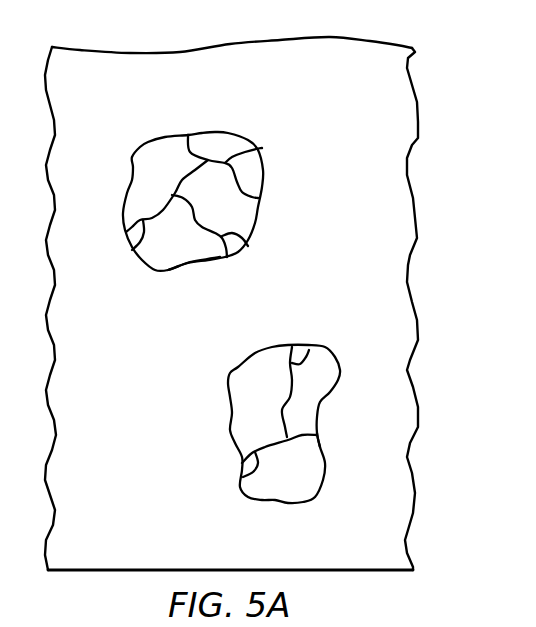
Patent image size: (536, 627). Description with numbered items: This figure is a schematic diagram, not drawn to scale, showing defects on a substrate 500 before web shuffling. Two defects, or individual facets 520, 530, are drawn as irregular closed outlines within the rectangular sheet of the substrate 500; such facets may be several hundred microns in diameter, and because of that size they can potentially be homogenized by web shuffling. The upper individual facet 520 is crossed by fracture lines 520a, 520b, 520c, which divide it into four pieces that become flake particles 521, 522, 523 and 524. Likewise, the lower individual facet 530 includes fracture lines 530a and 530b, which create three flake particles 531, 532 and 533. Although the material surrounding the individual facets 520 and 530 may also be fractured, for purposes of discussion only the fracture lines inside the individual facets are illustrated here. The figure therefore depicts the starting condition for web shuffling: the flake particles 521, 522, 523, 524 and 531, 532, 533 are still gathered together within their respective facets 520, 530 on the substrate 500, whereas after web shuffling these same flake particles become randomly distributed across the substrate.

The substrate 500 is at (130, 52).
The individual facet 520 is at (128, 192).
The fracture line 520a is at (257, 152).
The fracture line 520b is at (136, 250).
The fracture line 520c is at (250, 243).
The flake particle 521 is at (227, 140).
The flake particle 522 is at (244, 213).
The flake particle 523 is at (188, 250).
The flake particle 524 is at (152, 152).
The individual facet 530 is at (283, 500).
The fracture line 530a is at (300, 363).
The fracture line 530b is at (242, 478).
The flake particle 531 is at (244, 410).
The flake particle 532 is at (312, 394).
The flake particle 533 is at (316, 472).